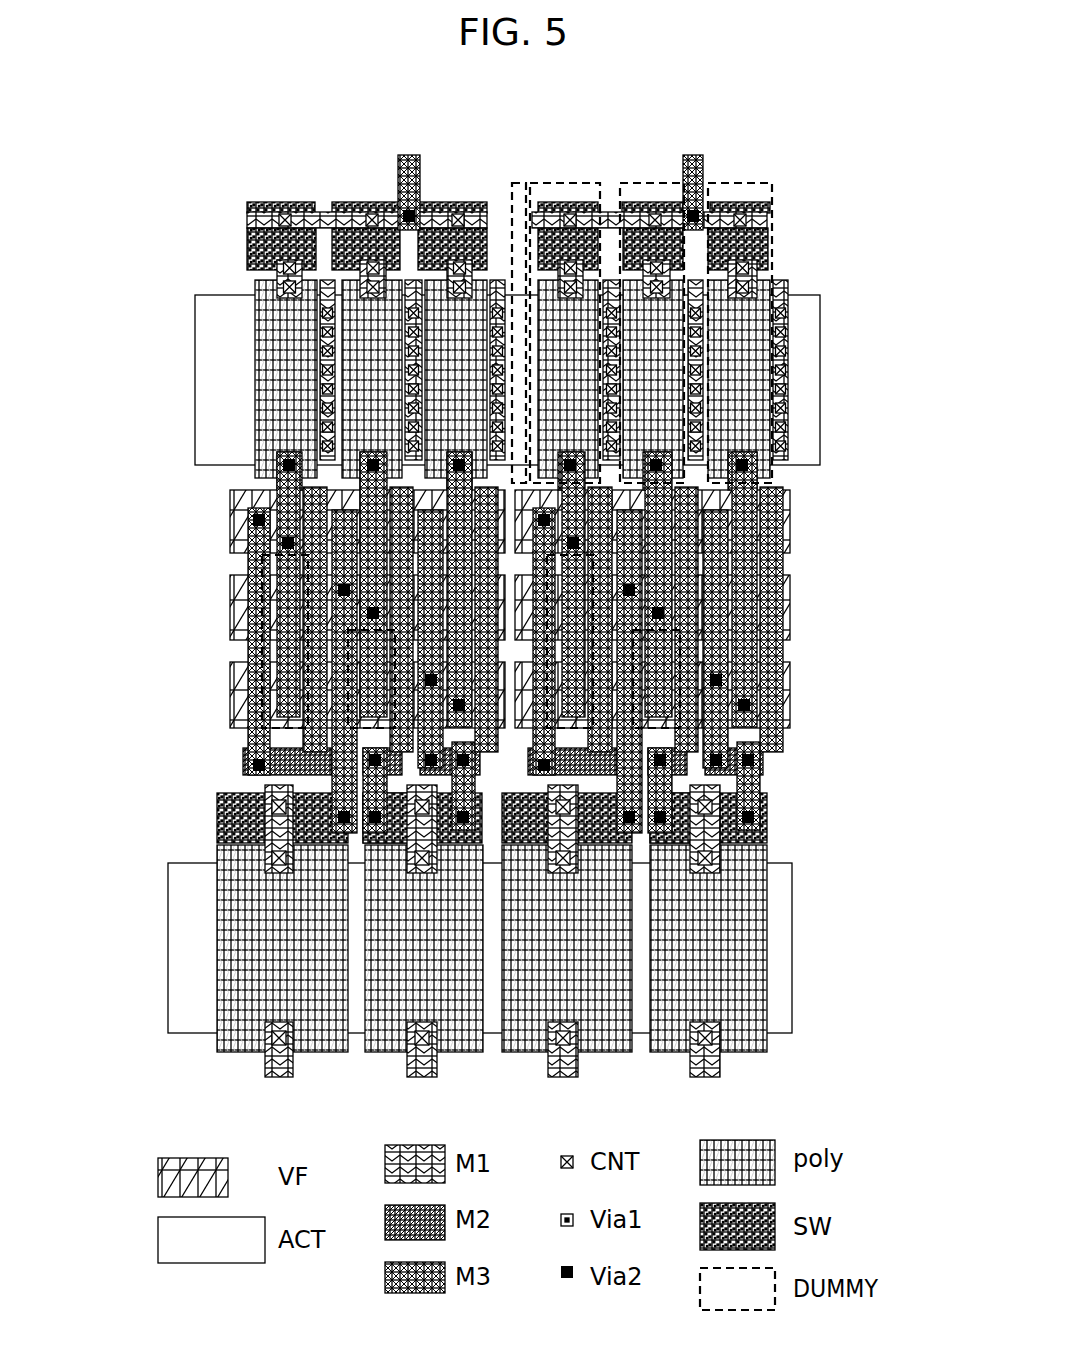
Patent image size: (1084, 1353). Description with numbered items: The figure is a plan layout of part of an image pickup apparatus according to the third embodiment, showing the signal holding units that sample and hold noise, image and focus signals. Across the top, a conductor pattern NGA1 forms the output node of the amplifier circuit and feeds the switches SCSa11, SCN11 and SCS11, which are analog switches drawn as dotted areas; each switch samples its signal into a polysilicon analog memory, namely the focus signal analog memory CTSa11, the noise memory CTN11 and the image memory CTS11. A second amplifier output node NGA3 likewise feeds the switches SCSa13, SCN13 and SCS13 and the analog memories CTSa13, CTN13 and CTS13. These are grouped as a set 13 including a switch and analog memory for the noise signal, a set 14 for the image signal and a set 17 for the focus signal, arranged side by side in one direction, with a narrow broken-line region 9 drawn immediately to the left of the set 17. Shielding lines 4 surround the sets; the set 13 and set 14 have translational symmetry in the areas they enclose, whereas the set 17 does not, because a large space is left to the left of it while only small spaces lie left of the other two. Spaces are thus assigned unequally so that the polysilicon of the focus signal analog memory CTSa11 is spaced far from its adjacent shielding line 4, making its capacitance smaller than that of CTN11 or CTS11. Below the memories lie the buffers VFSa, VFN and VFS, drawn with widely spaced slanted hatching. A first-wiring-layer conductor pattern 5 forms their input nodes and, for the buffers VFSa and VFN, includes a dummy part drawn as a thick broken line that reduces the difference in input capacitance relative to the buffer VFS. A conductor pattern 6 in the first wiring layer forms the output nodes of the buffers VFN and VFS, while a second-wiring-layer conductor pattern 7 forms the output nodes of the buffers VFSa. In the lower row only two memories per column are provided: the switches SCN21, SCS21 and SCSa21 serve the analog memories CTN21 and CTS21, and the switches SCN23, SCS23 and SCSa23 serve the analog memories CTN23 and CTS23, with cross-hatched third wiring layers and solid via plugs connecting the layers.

The shielding line 4 is at (450, 272).
The conductor pattern 5 is at (460, 478).
The conductor pattern 6 is at (350, 636).
The conductor pattern 7 is at (250, 745).
The dummy region 9 is at (513, 183).
The set 13 is at (628, 183).
The set 14 is at (720, 183).
The set 17 is at (558, 183).
The switch SCSa11 is at (262, 250).
The switch SCN11 is at (352, 250).
The switch SCS11 is at (477, 250).
The conductor pattern NGA1 is at (412, 160).
The switch SCSa13 is at (590, 250).
The switch SCN13 is at (660, 250).
The switch SCS13 is at (760, 250).
The conductor pattern NGA3 is at (692, 160).
The focus signal analog memory CTSa11 is at (278, 322).
The analog memory CTN11 is at (362, 355).
The analog memory CTS11 is at (447, 395).
The analog memory CTSa13 is at (690, 322).
The analog memory CTN13 is at (660, 352).
The analog memory CTS13 is at (745, 390).
The buffer VFSa is at (240, 532).
The buffer VFN is at (238, 614).
The buffer VFS is at (238, 694).
The switch SCN21 is at (307, 810).
The switch SCS21 is at (442, 812).
The switch SCSa21 is at (397, 810).
The analog memory CTN21 is at (282, 948).
The analog memory CTS21 is at (424, 948).
The switch SCN23 is at (593, 810).
The switch SCS23 is at (727, 812).
The switch SCSa23 is at (683, 810).
The analog memory CTN23 is at (567, 948).
The analog memory CTS23 is at (708, 948).